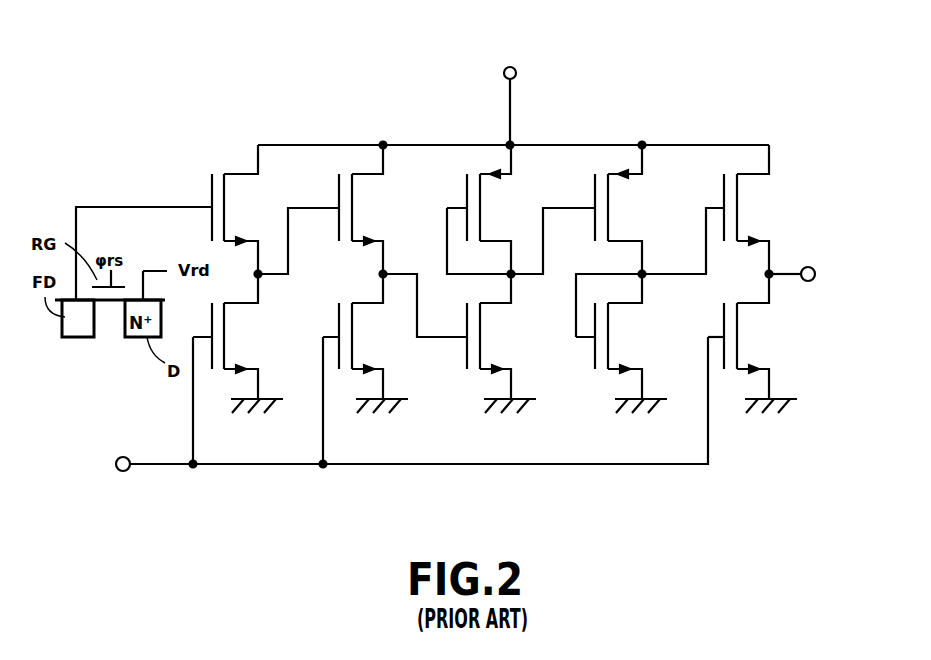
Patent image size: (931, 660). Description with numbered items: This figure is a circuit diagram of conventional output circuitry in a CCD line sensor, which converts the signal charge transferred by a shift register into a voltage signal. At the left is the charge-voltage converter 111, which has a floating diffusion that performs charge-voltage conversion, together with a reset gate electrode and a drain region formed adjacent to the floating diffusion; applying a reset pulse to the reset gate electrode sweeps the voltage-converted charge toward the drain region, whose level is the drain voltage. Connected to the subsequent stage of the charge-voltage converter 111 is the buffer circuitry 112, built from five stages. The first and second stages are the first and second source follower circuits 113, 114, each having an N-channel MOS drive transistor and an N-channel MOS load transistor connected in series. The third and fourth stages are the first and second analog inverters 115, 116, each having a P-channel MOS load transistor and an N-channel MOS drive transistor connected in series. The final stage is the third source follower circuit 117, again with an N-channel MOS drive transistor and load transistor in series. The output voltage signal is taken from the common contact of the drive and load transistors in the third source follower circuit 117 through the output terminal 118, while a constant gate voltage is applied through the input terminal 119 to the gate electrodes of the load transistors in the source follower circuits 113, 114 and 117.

The charge-voltage converter 111 is at (90, 342).
The buffer circuitry 112 is at (557, 108).
The first source follower circuit 113 is at (233, 158).
The second source follower circuit 114 is at (358, 158).
The first analog inverter 115 is at (472, 158).
The second analog inverter 116 is at (618, 158).
The third source follower circuit 117 is at (782, 178).
The output terminal 118 is at (812, 264).
The input terminal 119 is at (124, 456).